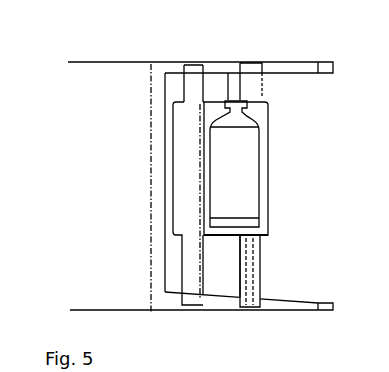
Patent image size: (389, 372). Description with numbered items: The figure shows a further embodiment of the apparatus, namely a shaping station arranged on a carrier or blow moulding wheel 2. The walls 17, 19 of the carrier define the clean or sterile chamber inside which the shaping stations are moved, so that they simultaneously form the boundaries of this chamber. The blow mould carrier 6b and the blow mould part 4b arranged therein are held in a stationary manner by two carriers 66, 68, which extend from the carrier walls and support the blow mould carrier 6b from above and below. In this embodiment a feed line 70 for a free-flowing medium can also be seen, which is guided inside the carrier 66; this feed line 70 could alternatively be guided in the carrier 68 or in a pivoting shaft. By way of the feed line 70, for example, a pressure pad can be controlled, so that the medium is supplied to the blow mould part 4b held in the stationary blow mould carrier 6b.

The blow moulding wheel 2 is at (147, 123).
The wall 17 is at (226, 69).
The wall 19 is at (150, 166).
The blow mould carrier 6b is at (178, 207).
The blow mould part 4b is at (253, 132).
The feed line 70 is at (248, 263).
The carrier 68 is at (190, 278).
The carrier 66 is at (257, 285).